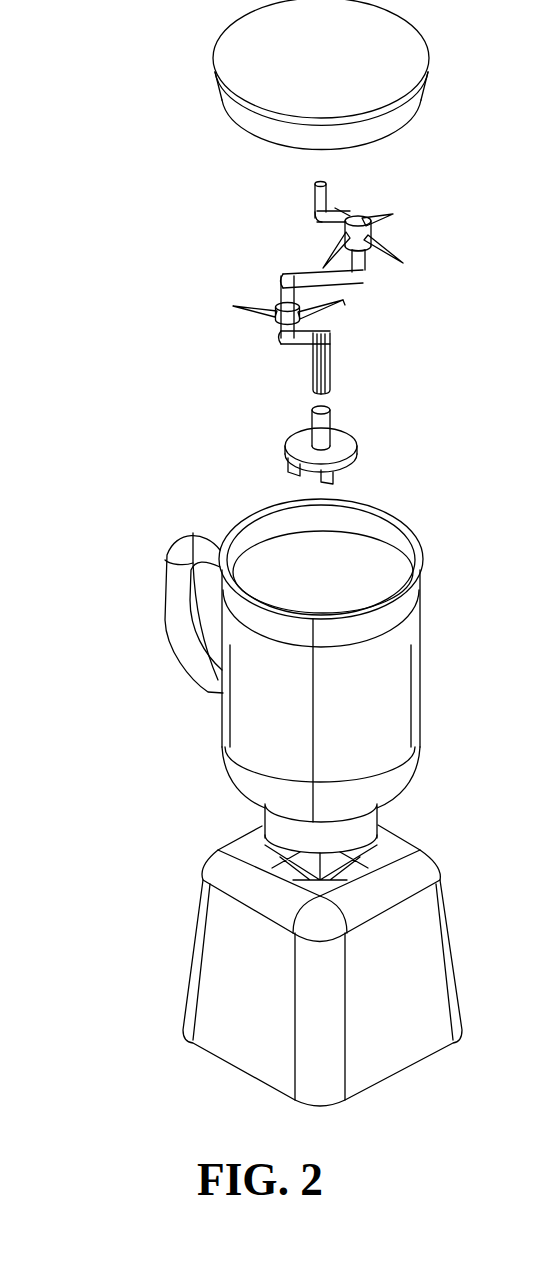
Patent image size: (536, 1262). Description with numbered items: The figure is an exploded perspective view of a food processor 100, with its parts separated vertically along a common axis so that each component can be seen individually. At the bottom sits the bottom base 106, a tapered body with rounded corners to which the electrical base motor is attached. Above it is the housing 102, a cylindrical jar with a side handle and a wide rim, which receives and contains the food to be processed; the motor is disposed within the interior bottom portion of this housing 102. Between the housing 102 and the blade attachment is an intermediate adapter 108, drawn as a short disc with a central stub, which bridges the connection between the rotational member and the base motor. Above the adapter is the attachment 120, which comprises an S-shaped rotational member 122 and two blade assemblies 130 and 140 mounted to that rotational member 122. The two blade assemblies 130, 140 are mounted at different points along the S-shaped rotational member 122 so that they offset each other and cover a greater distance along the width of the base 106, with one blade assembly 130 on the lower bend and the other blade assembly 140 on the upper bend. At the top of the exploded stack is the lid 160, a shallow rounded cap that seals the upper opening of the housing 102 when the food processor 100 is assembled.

The food processor 100 is at (192, 805).
The housing 102 is at (288, 730).
The bottom base 106 is at (396, 1007).
The intermediate adapter 108 is at (340, 441).
The attachment 120 is at (333, 364).
The S-shaped rotational member 122 is at (317, 272).
The blade assembly 130 is at (268, 318).
The blade assembly 140 is at (372, 230).
The lid 160 is at (333, 69).